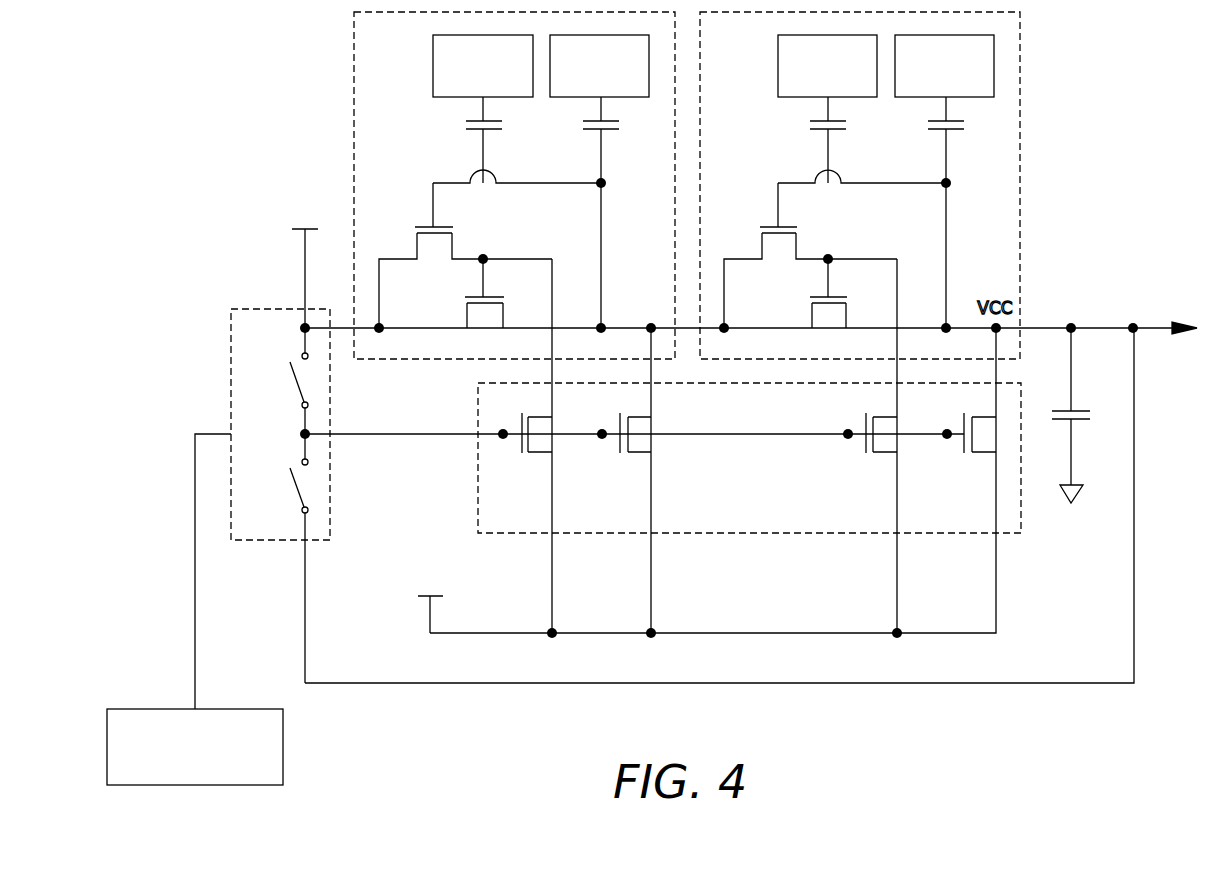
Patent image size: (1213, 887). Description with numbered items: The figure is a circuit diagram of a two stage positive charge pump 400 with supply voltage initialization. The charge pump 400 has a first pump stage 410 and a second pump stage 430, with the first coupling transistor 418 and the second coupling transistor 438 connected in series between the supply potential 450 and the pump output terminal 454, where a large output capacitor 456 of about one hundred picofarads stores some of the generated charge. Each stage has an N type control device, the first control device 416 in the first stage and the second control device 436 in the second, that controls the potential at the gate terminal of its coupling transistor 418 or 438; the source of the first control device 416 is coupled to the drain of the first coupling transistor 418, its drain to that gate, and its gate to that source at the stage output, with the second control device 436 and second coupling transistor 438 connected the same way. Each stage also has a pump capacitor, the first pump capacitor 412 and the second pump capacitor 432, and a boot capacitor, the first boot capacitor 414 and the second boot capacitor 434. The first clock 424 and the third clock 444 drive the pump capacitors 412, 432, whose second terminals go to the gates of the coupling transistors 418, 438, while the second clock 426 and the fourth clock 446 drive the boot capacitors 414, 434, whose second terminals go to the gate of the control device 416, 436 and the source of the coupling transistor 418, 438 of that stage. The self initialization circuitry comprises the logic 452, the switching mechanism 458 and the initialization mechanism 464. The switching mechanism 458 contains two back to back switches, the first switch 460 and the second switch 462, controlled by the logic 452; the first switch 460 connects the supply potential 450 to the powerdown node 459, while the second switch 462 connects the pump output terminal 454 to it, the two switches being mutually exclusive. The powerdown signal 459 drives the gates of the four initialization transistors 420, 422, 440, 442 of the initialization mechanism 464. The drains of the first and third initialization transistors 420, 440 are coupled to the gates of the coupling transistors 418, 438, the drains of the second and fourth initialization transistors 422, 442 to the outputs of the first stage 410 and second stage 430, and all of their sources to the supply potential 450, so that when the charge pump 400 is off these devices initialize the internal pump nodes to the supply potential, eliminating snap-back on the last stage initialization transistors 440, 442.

The two stage positive charge pump 400 is at (228, 183).
The first pump stage 410 is at (514, 185).
The pump capacitor C1 412 is at (489, 140).
The boot capacitor C2 414 is at (606, 140).
The N type device N1 416 is at (465, 255).
The coupling transistor N2 418 is at (486, 293).
The N type transistor device N3 420 is at (532, 433).
The N type transistor device N4 422 is at (631, 433).
The Clock 1 424 is at (483, 66).
The Clock 2 426 is at (599, 66).
The second pump stage 430 is at (860, 185).
The pump capacitor C3 432 is at (833, 140).
The boot capacitor C4 434 is at (951, 140).
The N type device N5 436 is at (810, 255).
The coupling transistor N6 438 is at (831, 293).
The N type transistor device N7 440 is at (877, 433).
The N type transistor device N8 442 is at (976, 433).
The Clock 3 444 is at (827, 66).
The Clock 4 446 is at (944, 66).
The VCC supply potential 450 is at (356, 419).
The logic 452 is at (195, 609).
The pump output terminal VOUT 454 is at (1085, 328).
The capacitor C5 456 is at (1077, 415).
The switching mechanism 458 is at (230, 357).
The POWERDOWN signal 459 is at (427, 435).
The switch S1 460 is at (280, 381).
The switch S2 462 is at (280, 473).
The initialization mechanism 464 is at (749, 458).